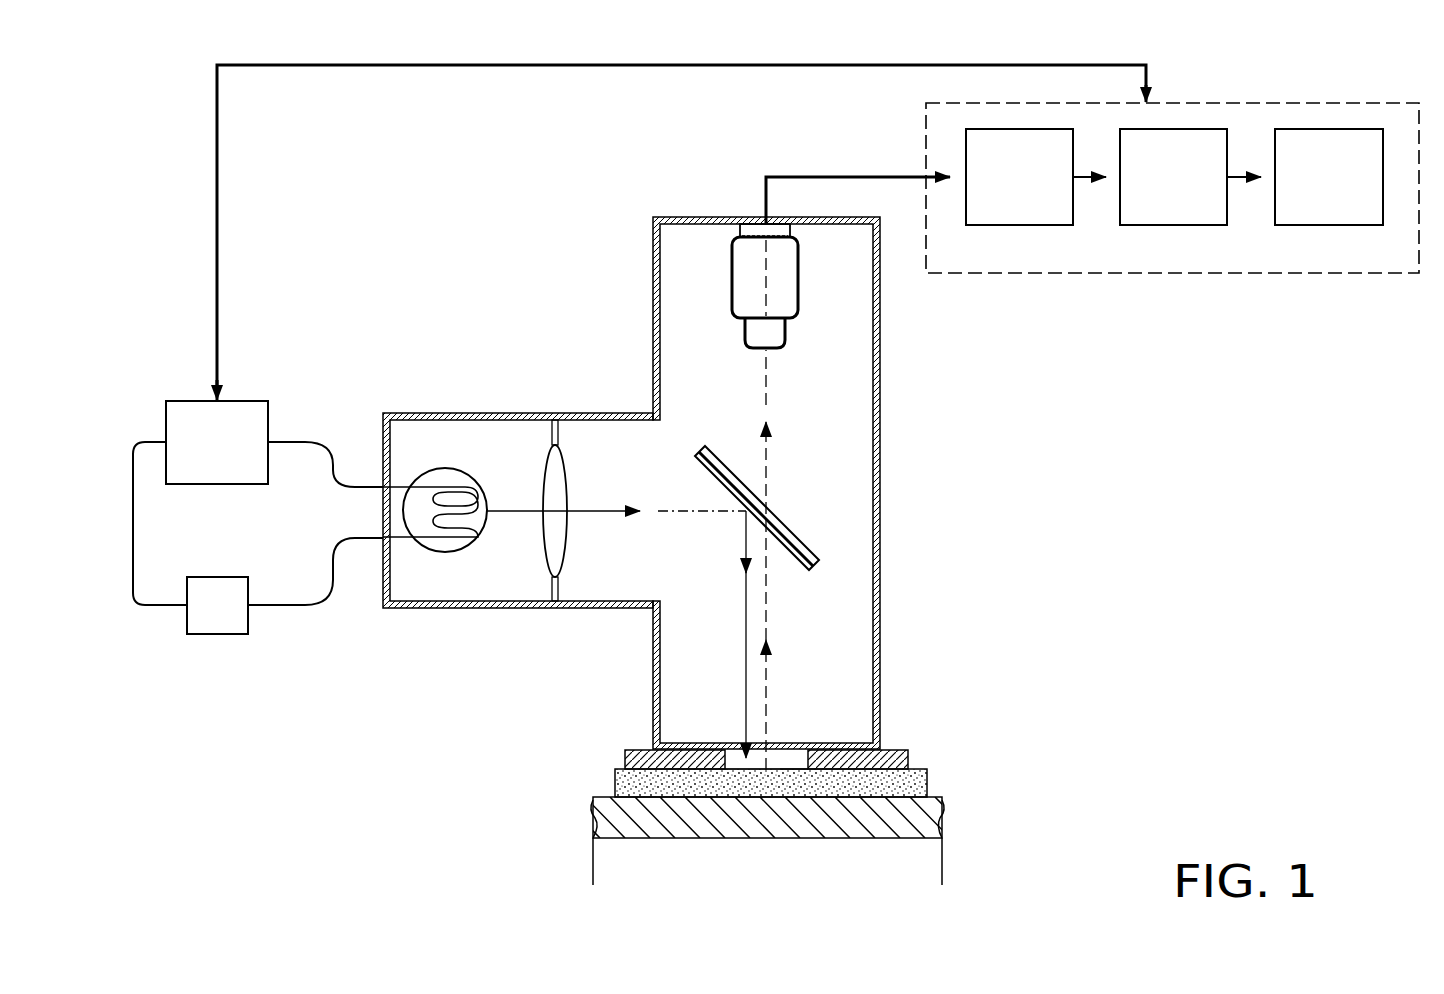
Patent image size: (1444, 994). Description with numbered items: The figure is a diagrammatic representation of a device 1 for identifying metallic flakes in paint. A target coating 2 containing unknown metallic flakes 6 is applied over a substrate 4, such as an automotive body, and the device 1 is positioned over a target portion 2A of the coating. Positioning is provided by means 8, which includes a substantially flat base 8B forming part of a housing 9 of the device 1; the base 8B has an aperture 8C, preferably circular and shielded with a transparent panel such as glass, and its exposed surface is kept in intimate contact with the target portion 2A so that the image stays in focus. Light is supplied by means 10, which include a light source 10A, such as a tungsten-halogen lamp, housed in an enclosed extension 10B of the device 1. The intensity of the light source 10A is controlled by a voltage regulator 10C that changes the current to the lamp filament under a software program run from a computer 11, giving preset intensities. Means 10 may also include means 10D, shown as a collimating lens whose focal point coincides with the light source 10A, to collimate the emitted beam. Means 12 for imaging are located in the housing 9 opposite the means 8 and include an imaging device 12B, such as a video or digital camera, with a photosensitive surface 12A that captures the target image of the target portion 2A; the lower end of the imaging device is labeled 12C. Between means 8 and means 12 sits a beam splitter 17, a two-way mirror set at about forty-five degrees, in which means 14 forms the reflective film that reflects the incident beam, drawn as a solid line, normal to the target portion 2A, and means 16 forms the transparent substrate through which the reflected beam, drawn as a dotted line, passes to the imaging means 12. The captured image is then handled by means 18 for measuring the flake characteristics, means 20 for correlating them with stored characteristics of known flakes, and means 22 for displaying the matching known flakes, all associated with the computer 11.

The device 1 is at (538, 208).
The target coating 2 is at (942, 783).
The target portion 2A is at (790, 768).
The substrate 4 is at (944, 825).
The unknown metallic flakes 6 is at (910, 780).
The means for positioning 8 is at (765, 712).
The base 8B is at (650, 752).
The aperture 8C is at (805, 752).
The housing 9 is at (878, 385).
The means for producing beams of light 10 is at (547, 630).
The light source 10A is at (443, 470).
The enclosed extension 10B is at (577, 413).
The voltage regulator 10C is at (228, 400).
The means for collimating 10D is at (570, 560).
The computer 11 is at (1172, 207).
The means for imaging 12 is at (770, 270).
The photosensitive surface 12A is at (740, 236).
The imaging device 12B is at (732, 270).
The detector window 12C is at (788, 330).
The means for directing beams of light 14 is at (818, 556).
The means for directing reflection 16 is at (824, 533).
The beam splitter 17 is at (806, 494).
The means for measuring 18 is at (1013, 226).
The means for correlating 20 is at (1166, 226).
The means for displaying 22 is at (1324, 226).